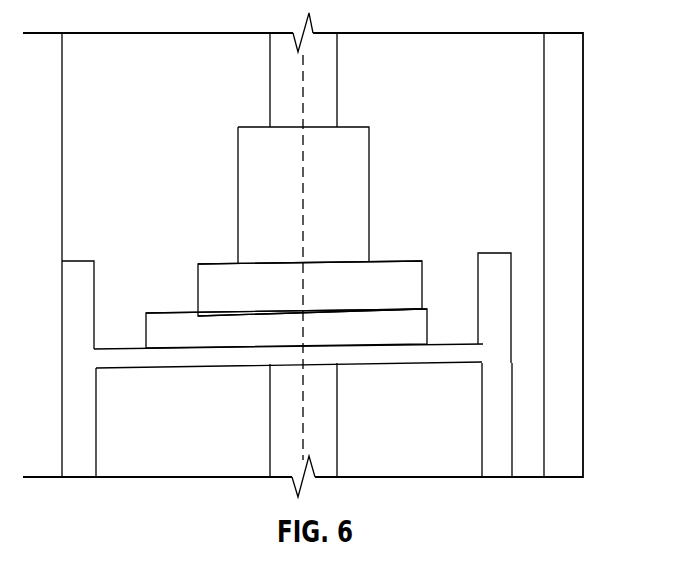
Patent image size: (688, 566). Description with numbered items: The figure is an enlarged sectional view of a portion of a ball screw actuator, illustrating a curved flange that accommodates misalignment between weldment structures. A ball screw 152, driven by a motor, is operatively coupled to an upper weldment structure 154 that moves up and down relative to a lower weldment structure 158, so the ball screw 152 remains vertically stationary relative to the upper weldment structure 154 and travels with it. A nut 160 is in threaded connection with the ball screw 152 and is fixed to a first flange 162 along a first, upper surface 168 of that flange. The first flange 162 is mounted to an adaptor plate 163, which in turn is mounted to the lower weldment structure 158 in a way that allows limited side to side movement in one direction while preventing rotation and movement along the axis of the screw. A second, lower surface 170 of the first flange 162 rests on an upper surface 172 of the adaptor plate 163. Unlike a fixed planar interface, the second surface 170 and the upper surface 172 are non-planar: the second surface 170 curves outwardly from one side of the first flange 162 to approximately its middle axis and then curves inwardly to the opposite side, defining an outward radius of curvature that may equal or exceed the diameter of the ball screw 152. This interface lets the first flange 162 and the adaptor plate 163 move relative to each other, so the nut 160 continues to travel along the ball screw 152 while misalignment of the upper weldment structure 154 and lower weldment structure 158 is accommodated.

The ball screw 152 is at (282, 98).
The upper weldment structure 154 is at (568, 128).
The lower weldment structure 158 is at (488, 265).
The nut 160 is at (362, 143).
The first flange 162 is at (205, 288).
The adaptor plate 163 is at (398, 330).
The first, upper surface 168 is at (222, 264).
The second, lower surface 170 is at (233, 318).
The upper surface 172 is at (355, 308).